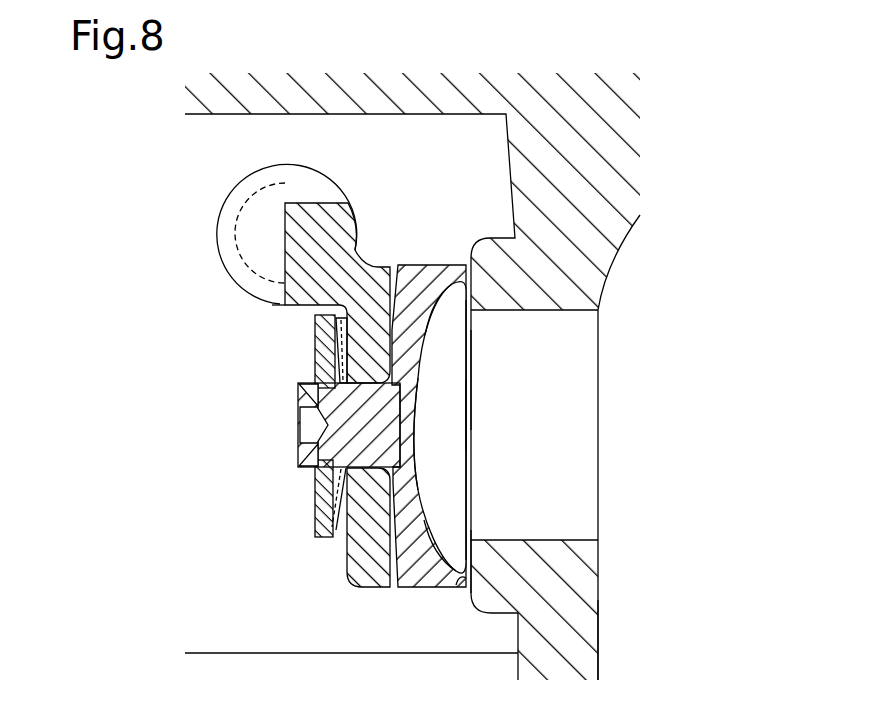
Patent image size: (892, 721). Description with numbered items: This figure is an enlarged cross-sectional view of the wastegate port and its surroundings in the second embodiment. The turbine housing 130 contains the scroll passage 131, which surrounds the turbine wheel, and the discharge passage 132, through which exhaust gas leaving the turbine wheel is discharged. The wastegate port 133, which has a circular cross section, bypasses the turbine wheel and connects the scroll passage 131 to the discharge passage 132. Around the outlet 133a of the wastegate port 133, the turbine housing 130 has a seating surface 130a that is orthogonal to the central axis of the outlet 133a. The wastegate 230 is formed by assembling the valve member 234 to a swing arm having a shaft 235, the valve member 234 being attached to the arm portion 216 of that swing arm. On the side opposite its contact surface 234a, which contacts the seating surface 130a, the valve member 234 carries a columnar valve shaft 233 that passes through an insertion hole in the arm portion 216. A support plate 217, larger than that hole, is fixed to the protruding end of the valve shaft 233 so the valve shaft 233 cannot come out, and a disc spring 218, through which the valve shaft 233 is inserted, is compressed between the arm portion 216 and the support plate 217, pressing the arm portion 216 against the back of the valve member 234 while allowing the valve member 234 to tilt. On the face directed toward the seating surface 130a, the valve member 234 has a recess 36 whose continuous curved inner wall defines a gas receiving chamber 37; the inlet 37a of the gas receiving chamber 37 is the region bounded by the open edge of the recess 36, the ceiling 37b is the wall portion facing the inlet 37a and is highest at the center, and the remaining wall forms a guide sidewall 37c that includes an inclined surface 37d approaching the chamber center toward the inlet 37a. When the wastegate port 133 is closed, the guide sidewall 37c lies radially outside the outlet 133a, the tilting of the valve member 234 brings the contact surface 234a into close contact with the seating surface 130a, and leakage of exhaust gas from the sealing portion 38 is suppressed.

The turbine housing 130 is at (220, 115).
The seating surface 130a is at (462, 580).
The scroll passage 131 is at (674, 636).
The discharge passage 132 is at (262, 636).
The wastegate port 133 is at (576, 540).
The outlet 133a is at (473, 540).
The wastegate 230 is at (276, 375).
The shaft 235 is at (236, 232).
The valve shaft 233 is at (337, 447).
The disc spring 218 is at (323, 350).
The support plate 217 is at (315, 504).
The arm portion 216 is at (347, 552).
The sealing portion 38 is at (469, 378).
The valve member 234 is at (413, 272).
The contact surface 234a is at (473, 410).
The recess 36 is at (473, 382).
The gas receiving chamber 37 is at (457, 464).
The inlet 37a is at (468, 470).
The ceiling 37b is at (421, 378).
The guide sidewall 37c is at (458, 562).
The inclined surface 37d is at (455, 287).